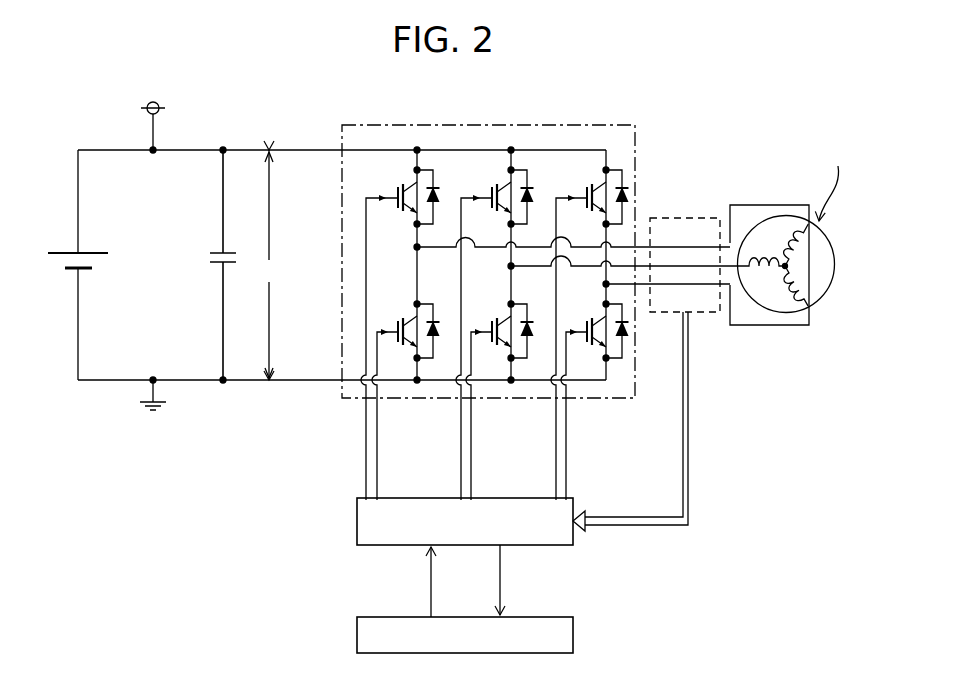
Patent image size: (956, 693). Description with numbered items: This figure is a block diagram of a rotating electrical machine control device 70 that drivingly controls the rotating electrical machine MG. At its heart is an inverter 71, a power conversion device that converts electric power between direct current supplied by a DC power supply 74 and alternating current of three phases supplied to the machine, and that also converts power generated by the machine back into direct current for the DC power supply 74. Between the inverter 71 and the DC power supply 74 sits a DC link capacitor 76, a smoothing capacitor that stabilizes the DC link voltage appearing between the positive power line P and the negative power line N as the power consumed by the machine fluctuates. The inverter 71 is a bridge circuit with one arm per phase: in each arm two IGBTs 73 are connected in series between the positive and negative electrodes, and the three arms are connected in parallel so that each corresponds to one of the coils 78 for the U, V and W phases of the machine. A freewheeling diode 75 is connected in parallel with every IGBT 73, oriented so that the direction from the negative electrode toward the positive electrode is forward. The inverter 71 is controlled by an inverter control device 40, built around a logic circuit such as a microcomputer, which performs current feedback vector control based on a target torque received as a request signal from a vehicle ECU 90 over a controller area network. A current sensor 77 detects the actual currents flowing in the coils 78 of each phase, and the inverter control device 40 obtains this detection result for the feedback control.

The rotating electrical machine control device 70 is at (241, 114).
The inverter 71 is at (636, 133).
The IGBT 73 is at (582, 179).
The freewheeling diode 75 is at (443, 168).
The DC power supply 74 is at (94, 280).
The DC link capacitor 76 is at (214, 253).
The current sensor 77 is at (672, 215).
The coils 78 is at (814, 282).
The inverter control device 40 is at (357, 520).
The vehicle ECU 90 is at (357, 632).